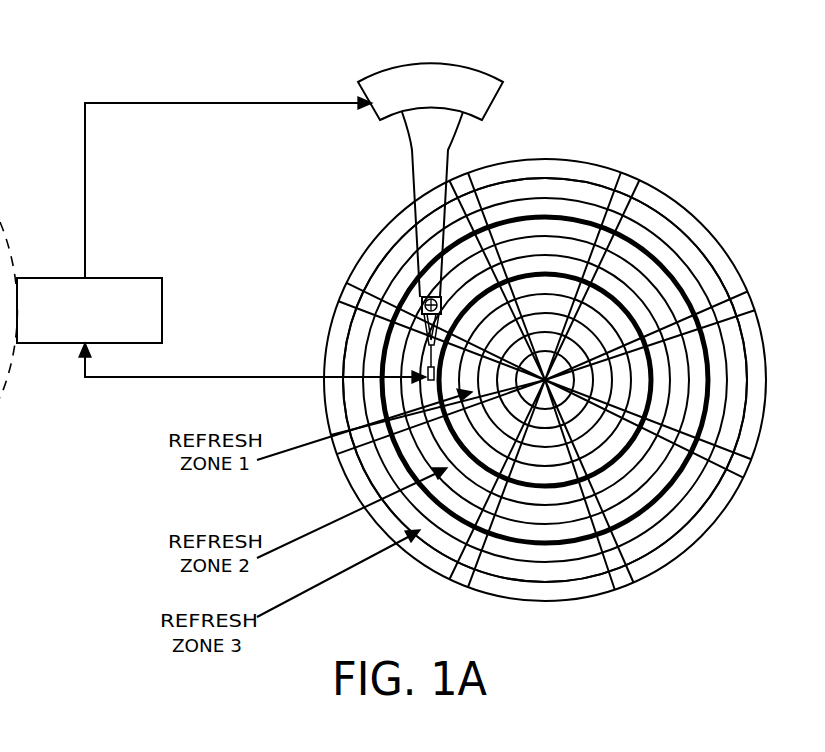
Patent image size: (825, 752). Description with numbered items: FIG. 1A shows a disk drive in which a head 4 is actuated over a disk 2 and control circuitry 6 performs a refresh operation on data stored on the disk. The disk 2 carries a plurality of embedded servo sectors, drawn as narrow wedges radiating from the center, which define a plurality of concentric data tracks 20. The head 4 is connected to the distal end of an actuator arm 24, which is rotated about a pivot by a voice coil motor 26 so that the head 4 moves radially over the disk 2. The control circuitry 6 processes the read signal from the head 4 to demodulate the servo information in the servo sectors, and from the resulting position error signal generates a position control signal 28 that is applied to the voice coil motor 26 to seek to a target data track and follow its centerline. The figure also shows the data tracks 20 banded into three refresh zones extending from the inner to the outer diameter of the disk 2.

The disk 2 is at (694, 211).
The head 4 is at (424, 385).
The control circuitry 6 is at (128, 278).
The data tracks 20 is at (545, 190).
The actuator arm 24 is at (410, 176).
The voice coil motor 26 is at (378, 112).
The position control signal 28 is at (84, 176).